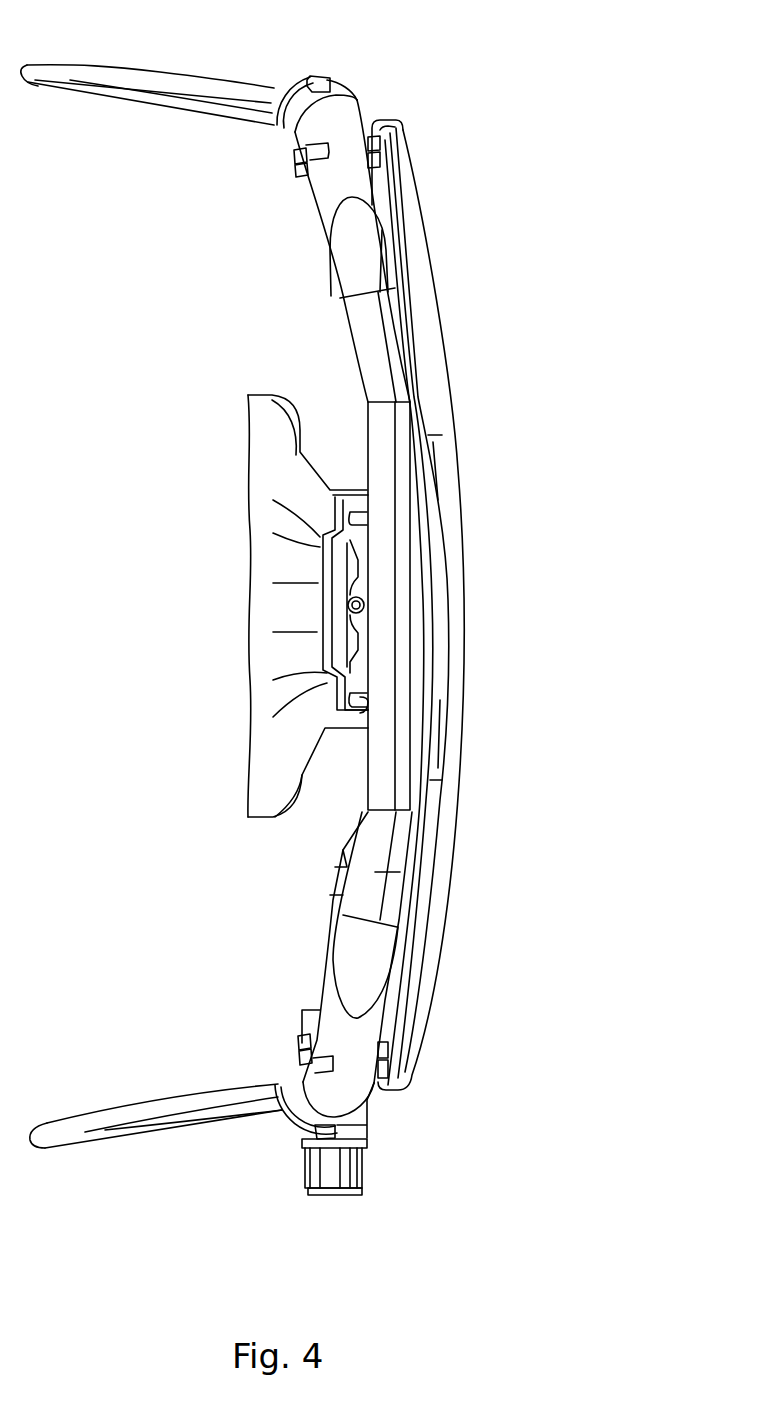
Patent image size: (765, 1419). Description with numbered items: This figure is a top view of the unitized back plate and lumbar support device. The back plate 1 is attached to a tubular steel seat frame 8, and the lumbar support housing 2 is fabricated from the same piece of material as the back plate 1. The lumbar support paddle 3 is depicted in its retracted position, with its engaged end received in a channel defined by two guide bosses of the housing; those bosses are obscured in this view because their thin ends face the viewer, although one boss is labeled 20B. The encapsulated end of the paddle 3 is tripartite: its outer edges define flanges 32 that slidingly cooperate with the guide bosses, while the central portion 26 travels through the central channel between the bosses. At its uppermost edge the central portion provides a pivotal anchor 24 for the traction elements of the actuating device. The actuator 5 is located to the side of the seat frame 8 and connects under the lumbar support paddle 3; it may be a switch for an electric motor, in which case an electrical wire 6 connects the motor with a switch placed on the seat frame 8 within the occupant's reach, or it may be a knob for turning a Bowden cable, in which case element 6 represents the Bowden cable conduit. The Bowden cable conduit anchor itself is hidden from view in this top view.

The back plate 1 is at (433, 330).
The lumbar support housing 2 is at (323, 625).
The lumbar support paddle 3 is at (330, 687).
The actuator 5 is at (288, 1172).
The electrical wire 6 is at (350, 847).
The seat frame 8 is at (335, 122).
The bracket 20B is at (343, 493).
The pivotal anchor 24 is at (364, 600).
The central portion 26 is at (378, 605).
The flanges 32 is at (362, 700).